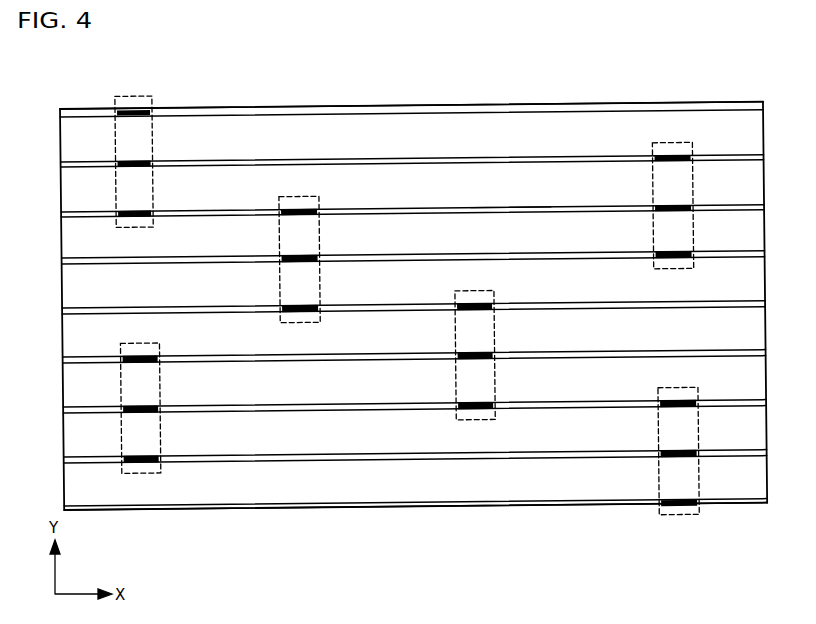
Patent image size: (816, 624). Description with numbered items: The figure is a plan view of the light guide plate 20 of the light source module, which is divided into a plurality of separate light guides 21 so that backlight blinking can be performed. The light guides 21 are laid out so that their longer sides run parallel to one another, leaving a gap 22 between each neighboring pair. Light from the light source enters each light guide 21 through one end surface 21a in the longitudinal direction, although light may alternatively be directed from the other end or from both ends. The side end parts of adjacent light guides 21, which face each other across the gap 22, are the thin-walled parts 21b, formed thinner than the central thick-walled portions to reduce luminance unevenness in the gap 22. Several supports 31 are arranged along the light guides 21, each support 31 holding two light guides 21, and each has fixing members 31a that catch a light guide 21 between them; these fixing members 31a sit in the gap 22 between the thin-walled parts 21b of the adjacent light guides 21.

The light guide plate 20 is at (757, 97).
The light guide 21 is at (757, 176).
The end surface 21a is at (767, 438).
The thin-walled part 21b is at (491, 207).
The gap 22 is at (763, 253).
The support 31 is at (150, 97).
The fixing member 31a is at (140, 212).